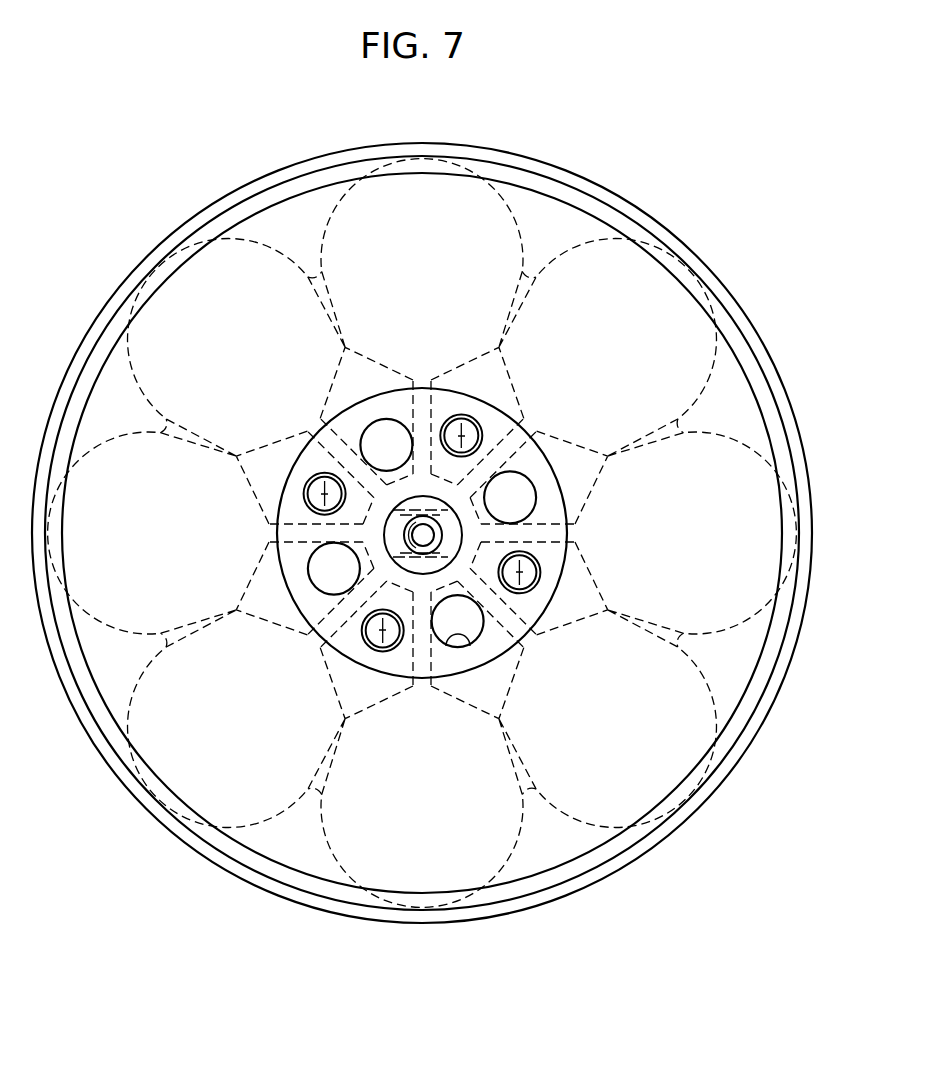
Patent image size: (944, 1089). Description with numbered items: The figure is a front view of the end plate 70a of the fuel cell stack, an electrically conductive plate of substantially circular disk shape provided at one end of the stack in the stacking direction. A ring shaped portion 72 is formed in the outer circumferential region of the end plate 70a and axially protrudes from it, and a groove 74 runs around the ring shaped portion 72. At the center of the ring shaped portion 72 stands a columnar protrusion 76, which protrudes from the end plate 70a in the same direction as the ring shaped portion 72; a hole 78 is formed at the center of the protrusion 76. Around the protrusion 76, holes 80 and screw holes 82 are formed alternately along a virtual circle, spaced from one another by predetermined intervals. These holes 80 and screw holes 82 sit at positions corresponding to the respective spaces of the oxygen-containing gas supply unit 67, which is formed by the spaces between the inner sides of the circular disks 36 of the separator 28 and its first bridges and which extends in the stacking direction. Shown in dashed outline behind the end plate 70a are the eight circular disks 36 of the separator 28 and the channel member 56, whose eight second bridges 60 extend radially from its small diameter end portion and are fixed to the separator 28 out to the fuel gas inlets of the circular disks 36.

The separator 28 is at (742, 333).
The groove 74 is at (162, 253).
The ring shaped portion 72 is at (203, 237).
The end plate 70a is at (669, 191).
The circular disk 36 is at (770, 525).
The oxygen-containing gas supply unit 67 is at (555, 433).
The second bridge 60 is at (557, 503).
The channel member 56 is at (443, 472).
The columnar protrusion 76 is at (459, 548).
The hole 78 is at (392, 553).
The hole 80 is at (468, 648).
The screw hole 82 is at (377, 645).